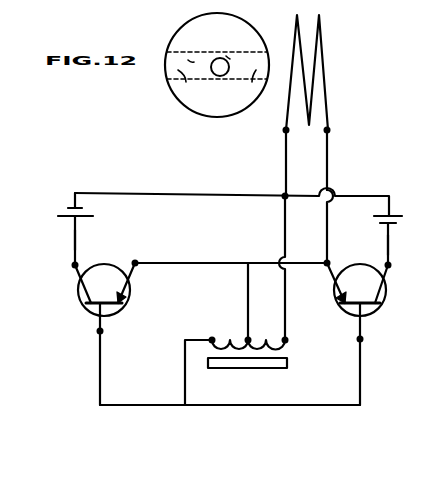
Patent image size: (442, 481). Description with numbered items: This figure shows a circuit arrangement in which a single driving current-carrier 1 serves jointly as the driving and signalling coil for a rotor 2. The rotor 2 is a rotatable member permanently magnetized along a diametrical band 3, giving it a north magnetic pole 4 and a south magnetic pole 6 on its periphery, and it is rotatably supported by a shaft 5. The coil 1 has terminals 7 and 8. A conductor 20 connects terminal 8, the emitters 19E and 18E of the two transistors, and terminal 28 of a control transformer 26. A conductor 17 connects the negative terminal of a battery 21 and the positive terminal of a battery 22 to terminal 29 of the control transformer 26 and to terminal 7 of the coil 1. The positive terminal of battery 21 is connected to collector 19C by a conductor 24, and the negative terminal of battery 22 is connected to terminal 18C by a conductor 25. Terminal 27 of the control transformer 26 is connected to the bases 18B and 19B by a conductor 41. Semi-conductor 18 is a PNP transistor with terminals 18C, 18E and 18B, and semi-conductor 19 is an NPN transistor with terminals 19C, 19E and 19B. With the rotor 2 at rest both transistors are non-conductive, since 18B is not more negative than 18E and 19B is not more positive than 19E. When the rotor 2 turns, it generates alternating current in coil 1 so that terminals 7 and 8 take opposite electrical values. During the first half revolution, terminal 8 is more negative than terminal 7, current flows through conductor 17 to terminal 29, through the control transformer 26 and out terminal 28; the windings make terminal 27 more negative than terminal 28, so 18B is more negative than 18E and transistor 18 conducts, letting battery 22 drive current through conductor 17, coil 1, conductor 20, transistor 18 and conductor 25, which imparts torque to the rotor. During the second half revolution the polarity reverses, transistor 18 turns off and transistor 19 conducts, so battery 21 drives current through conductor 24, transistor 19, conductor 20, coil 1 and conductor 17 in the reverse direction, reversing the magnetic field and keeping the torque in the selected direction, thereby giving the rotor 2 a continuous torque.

The driving current-carrier 1 is at (320, 18).
The rotor 2 is at (218, 111).
The diametrical band 3 is at (193, 62).
The north magnetic pole 4 is at (186, 82).
The shaft 5 is at (226, 58).
The south magnetic pole 6 is at (252, 82).
The terminal 7 is at (284, 130).
The terminal 8 is at (327, 131).
The conductor 17 is at (284, 178).
The semi-conductor 18 is at (377, 326).
The base 18B is at (362, 340).
The collector 18C is at (389, 265).
The emitter 18E is at (329, 263).
The semi-conductor 19 is at (106, 326).
The base 19B is at (102, 331).
The collector 19C is at (75, 265).
The emitter 19E is at (137, 264).
The conductor 20 is at (327, 181).
The battery 21 is at (87, 214).
The battery 22 is at (399, 221).
The conductor 24 is at (74, 237).
The conductor 25 is at (388, 246).
The control transformer 26 is at (273, 368).
The terminal 27 is at (212, 337).
The terminal 28 is at (250, 338).
The terminal 29 is at (286, 338).
The conductor 41 is at (285, 406).